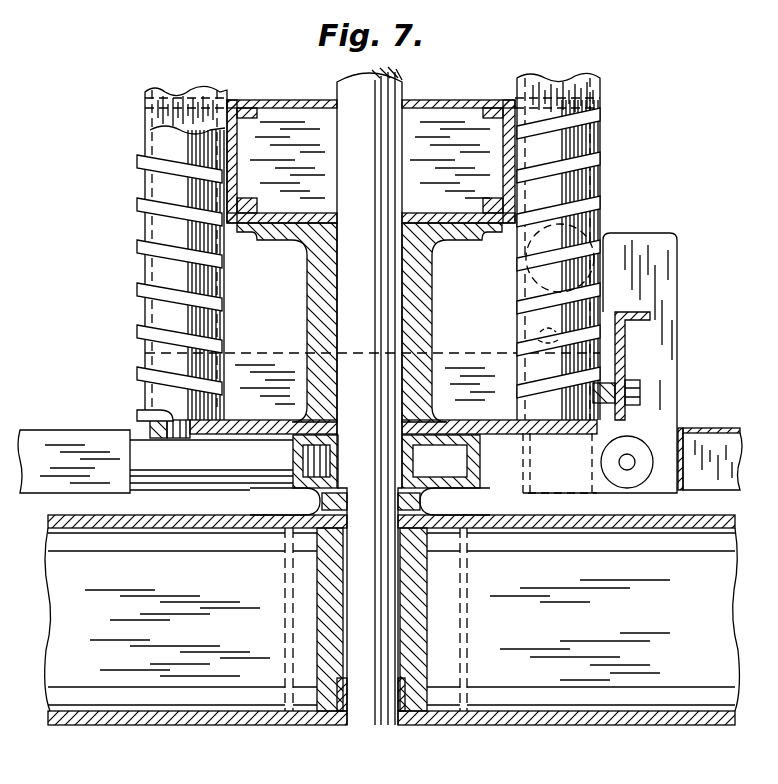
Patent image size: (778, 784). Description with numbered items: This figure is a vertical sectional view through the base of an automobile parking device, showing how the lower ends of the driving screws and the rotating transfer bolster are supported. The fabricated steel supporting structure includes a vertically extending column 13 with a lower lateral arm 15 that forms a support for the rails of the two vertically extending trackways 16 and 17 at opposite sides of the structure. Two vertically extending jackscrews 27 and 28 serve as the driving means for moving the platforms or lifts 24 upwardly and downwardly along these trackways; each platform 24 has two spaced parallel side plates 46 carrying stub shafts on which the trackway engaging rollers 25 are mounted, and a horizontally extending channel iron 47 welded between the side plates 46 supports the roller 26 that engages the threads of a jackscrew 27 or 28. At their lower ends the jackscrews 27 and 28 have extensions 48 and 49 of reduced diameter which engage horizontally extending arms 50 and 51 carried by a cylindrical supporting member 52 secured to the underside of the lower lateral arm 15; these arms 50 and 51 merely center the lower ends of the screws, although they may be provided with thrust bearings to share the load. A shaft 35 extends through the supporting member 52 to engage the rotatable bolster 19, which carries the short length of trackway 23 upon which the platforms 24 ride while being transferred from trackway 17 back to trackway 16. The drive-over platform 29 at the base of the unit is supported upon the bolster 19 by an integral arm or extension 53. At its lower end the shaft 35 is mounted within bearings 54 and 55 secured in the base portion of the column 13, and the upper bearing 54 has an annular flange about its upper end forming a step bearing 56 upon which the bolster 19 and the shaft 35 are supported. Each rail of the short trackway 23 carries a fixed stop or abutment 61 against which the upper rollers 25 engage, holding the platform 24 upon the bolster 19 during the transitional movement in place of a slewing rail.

The vertical extending column 13 is at (505, 717).
The lower lateral arm 15 is at (278, 113).
The trackway 16 is at (580, 90).
The trackway 17 is at (157, 120).
The rotatable bolster 19 is at (317, 473).
The short length of trackway 23 is at (597, 263).
The platform or lift 24 is at (713, 432).
The roller 25 is at (630, 480).
The roller 26 is at (622, 383).
The jackscrew 27 is at (577, 187).
The jackscrew 28 is at (160, 272).
The movable platform 29 is at (60, 443).
The shaft 35 is at (352, 140).
The side plate 46 is at (667, 278).
The channel iron 47 is at (626, 346).
The extension 48 is at (563, 433).
The extension 49 is at (167, 425).
The horizontally extending arm 50 is at (507, 420).
The horizontally extending arm 51 is at (258, 422).
The cylindrical supporting member 52 is at (310, 307).
The integral arm or extension 53 is at (217, 470).
The upper bearing 54 is at (340, 543).
The bearing 55 is at (405, 687).
The step bearing 56 is at (425, 498).
The stop or abutment 61 is at (547, 330).